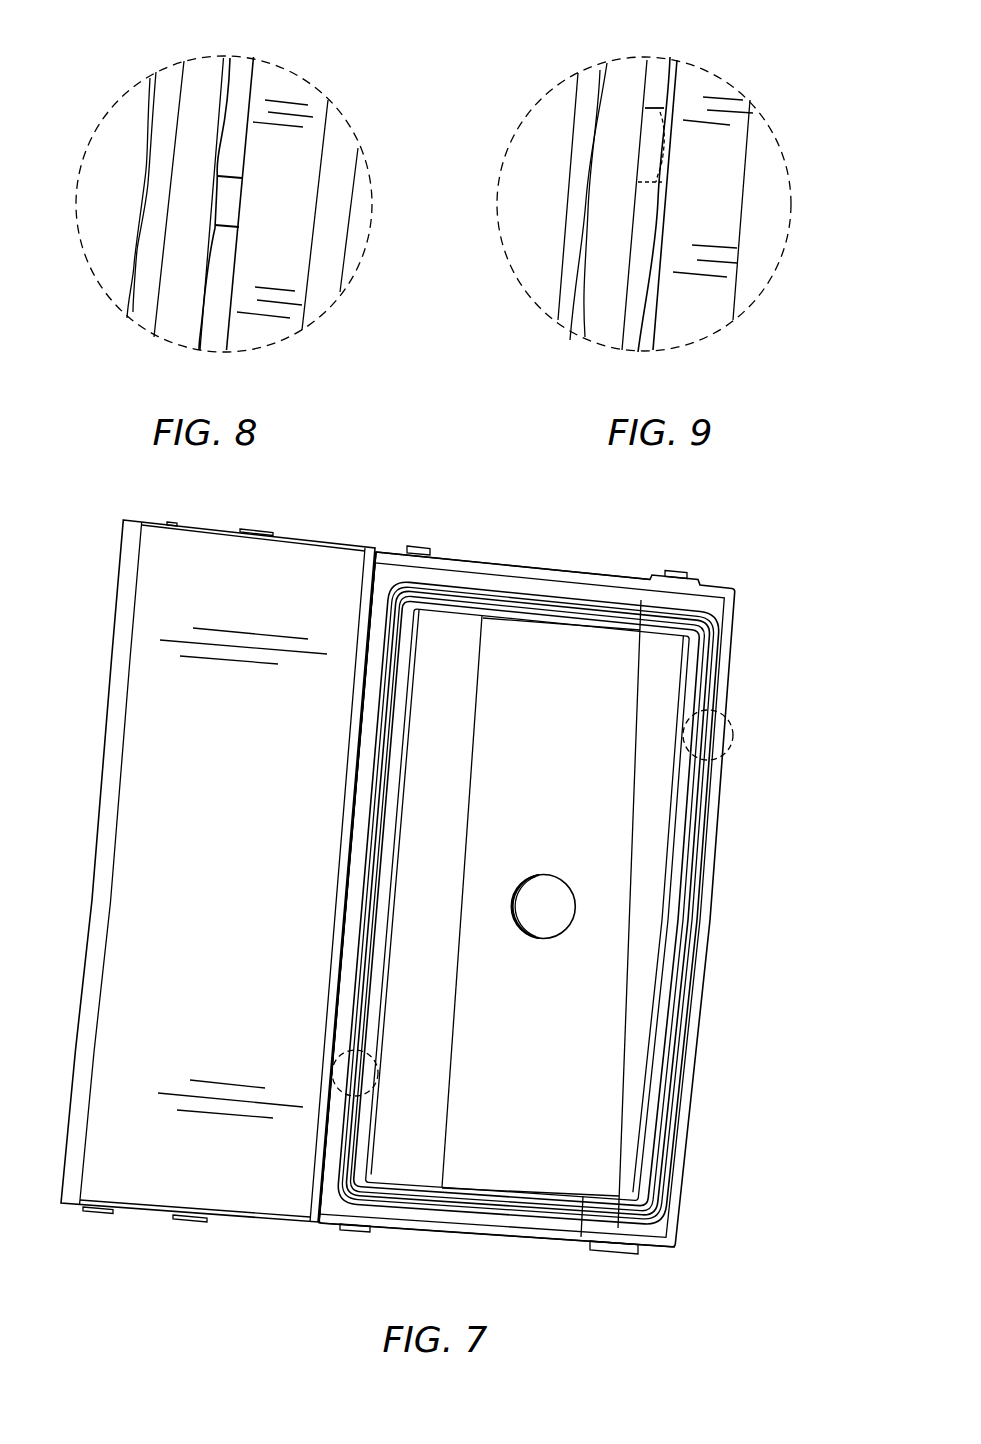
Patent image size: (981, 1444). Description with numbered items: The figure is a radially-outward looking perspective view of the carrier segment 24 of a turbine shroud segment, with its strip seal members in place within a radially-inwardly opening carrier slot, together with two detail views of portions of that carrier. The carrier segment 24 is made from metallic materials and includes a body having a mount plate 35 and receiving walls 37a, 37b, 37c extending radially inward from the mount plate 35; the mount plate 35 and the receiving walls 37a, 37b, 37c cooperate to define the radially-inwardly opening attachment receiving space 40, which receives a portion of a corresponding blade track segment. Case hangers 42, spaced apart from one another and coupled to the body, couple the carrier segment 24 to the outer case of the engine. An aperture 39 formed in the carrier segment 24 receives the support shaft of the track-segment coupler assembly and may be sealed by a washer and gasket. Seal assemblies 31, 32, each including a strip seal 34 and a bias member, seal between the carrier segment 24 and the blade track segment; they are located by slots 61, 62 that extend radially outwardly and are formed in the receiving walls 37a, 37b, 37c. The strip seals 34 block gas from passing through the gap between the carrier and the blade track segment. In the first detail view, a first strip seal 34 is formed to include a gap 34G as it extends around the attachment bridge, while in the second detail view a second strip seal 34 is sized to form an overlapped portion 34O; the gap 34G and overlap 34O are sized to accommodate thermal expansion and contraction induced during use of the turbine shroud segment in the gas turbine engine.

In FIG. 7, the carrier segment 24 is at (303, 1168).
In FIG. 7, the seal assembly 31 is at (377, 981).
In FIG. 7, the seal assembly 32 is at (346, 996).
In FIG. 8, the strip seal 34 is at (243, 154).
In FIG. 9, the strip seal 34 is at (645, 114).
In FIG. 8, the gap 34G is at (226, 205).
In FIG. 7, the gap 34G is at (370, 1073).
In FIG. 9, the overlapped portion 34O is at (668, 152).
In FIG. 7, the overlapped portion 34O is at (716, 730).
In FIG. 7, the mount plate 35 is at (565, 762).
In FIG. 7, the receiving wall 37a is at (711, 921).
In FIG. 7, the receiving wall 37b is at (514, 561).
In FIG. 7, the receiving wall 37c is at (357, 758).
In FIG. 7, the aperture 39 is at (546, 928).
In FIG. 7, the attachment receiving space 40 is at (548, 654).
In FIG. 7, the case hanger 42 is at (425, 543).
In FIG. 7, the slot 61 is at (378, 867).
In FIG. 7, the slot 62 is at (368, 849).